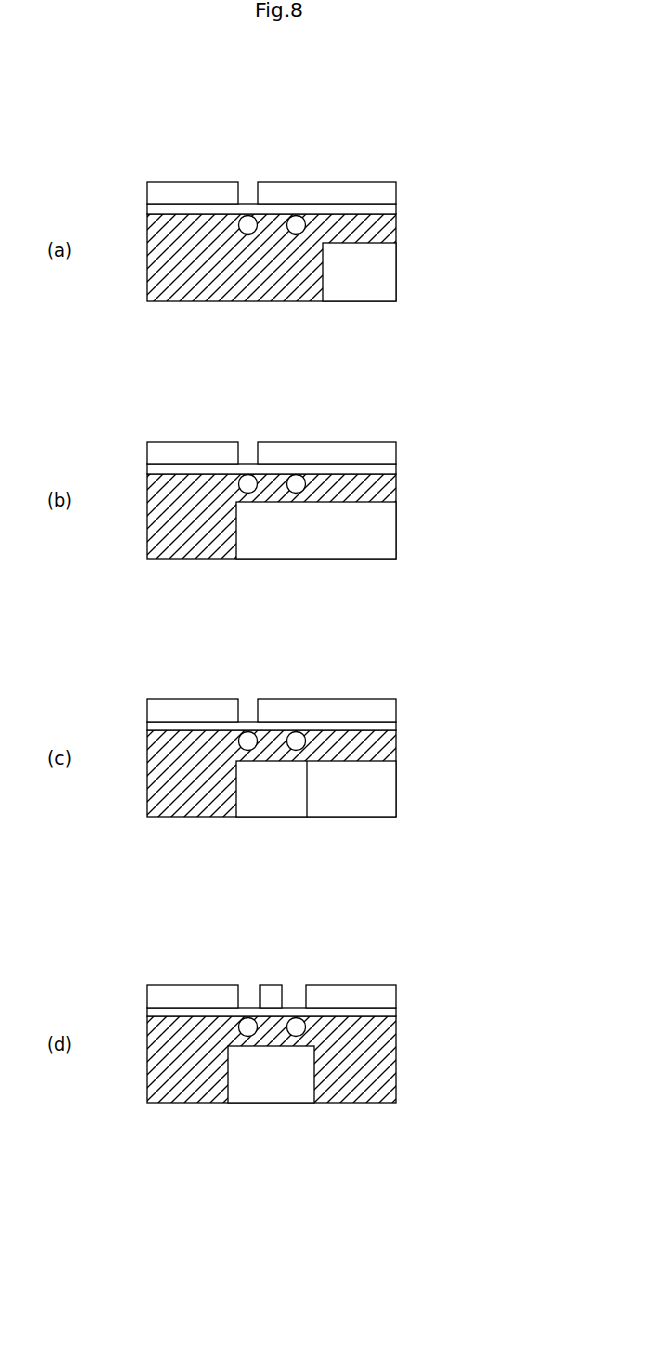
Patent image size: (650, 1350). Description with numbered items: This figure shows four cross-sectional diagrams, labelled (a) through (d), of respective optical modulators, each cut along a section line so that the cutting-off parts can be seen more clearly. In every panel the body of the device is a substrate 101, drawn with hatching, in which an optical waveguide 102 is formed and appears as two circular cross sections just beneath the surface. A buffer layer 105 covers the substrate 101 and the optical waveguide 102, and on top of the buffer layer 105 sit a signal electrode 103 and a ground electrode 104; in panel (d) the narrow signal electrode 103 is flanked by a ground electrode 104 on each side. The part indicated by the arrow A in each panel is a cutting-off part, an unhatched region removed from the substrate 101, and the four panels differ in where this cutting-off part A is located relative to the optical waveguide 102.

The substrate 101 is at (202, 267).
The optical waveguide 102 is at (296, 228).
The signal electrode 103 is at (328, 193).
The ground electrode 104 is at (192, 193).
The buffer layer 105 is at (397, 210).
The cutting-off part A is at (369, 271).